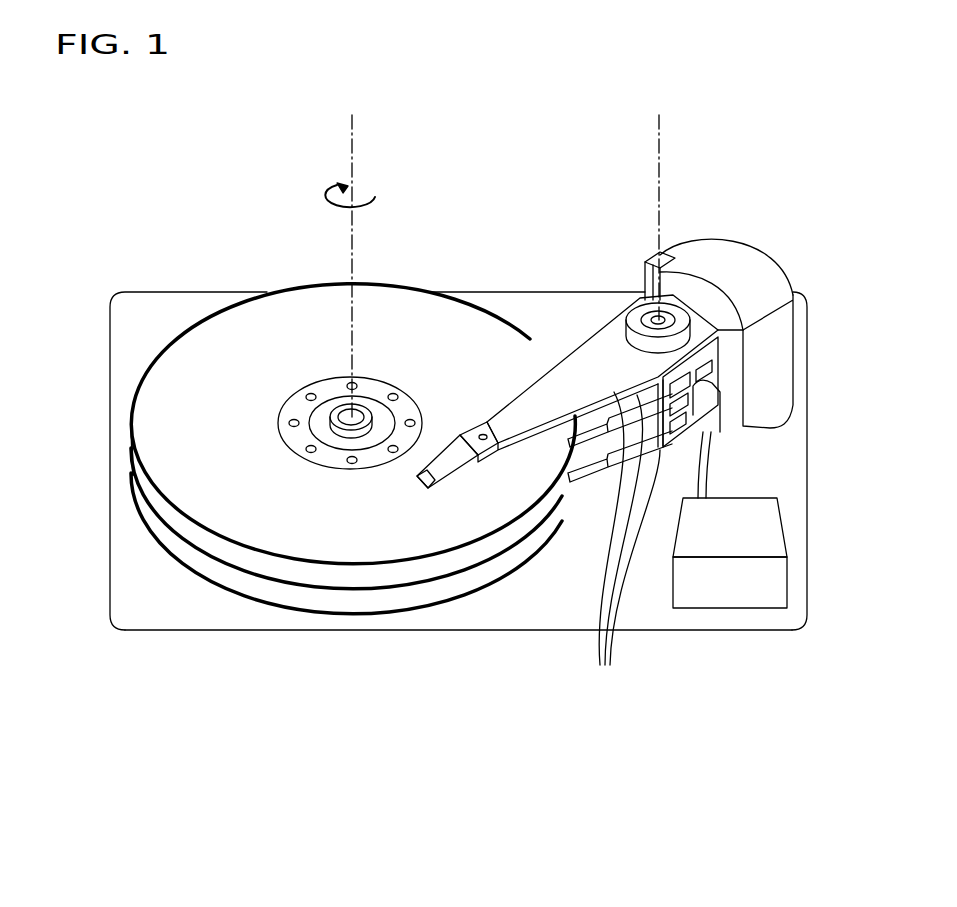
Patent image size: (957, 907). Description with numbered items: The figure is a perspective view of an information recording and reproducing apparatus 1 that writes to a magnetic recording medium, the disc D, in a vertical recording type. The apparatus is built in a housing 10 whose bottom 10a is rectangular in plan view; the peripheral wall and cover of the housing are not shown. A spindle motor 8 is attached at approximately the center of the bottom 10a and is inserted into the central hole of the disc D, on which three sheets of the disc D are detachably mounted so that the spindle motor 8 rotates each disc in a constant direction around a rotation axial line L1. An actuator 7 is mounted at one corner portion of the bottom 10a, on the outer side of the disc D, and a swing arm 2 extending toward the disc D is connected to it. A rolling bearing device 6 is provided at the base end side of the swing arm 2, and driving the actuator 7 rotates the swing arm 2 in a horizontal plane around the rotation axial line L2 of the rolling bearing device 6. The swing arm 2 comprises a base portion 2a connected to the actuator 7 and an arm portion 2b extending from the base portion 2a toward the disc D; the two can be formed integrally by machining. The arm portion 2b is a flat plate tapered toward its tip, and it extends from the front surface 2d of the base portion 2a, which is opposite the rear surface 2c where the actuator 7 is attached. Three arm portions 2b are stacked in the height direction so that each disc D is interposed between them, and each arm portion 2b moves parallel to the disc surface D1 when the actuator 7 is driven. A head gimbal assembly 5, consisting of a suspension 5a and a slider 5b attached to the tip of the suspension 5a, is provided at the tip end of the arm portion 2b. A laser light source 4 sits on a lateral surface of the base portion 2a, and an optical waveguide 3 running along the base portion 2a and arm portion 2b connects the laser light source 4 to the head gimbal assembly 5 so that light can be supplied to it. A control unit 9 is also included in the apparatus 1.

The information recording and reproducing apparatus 1 is at (192, 200).
The swing arm 2 is at (634, 467).
The base portion 2a is at (722, 352).
The arm portion 2b is at (512, 407).
The rear surface 2c is at (710, 310).
The front surface 2d is at (648, 392).
The optical waveguide 3 is at (629, 544).
The laser light source 4 is at (700, 364).
The head gimbal assembly 5 is at (448, 607).
The suspension 5a is at (453, 463).
The slider 5b is at (418, 477).
The rolling bearing device 6 is at (660, 303).
The actuator 7 is at (731, 306).
The spindle motor 8 is at (350, 418).
The control unit 9 is at (778, 578).
The housing 10 is at (458, 510).
The bottom 10a is at (530, 617).
The disc D is at (341, 517).
The disc surface D1 is at (246, 513).
The rotation axial line L1 is at (352, 157).
The rotation axial line L2 is at (660, 163).